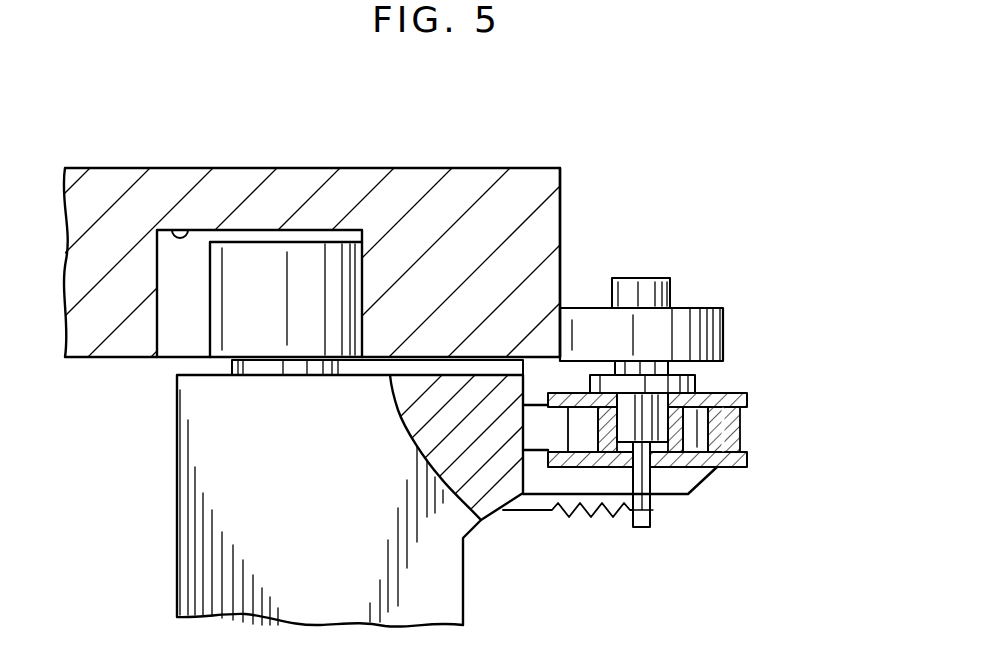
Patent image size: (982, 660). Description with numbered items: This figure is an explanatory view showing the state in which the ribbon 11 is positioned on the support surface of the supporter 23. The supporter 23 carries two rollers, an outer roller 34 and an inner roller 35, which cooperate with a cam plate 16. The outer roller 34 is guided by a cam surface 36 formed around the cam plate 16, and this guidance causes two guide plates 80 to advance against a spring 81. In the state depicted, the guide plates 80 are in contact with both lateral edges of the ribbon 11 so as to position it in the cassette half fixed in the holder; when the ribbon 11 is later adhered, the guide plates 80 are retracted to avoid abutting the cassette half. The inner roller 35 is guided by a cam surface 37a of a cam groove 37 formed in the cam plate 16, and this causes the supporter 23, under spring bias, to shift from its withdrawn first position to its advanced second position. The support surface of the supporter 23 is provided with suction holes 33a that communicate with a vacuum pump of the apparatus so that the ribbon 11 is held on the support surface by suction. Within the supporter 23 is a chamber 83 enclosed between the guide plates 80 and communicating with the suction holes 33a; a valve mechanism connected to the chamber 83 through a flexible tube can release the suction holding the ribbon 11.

The cam plate 16 is at (512, 142).
The cam surface 36 is at (560, 213).
The cam groove 37 is at (174, 228).
The inner roller 35 is at (289, 252).
The cam surface of cam groove 37a is at (350, 318).
The supporter 23 is at (143, 520).
The outer roller 34 is at (697, 308).
The guide plates 80 is at (746, 393).
The ribbon 11 is at (745, 420).
The suction holes 33a is at (745, 437).
The chamber 83 is at (692, 470).
The spring 81 is at (586, 518).